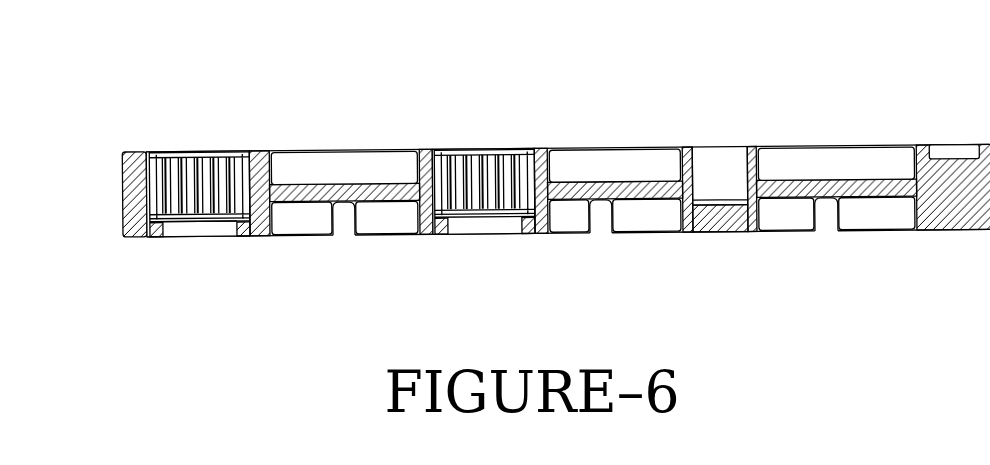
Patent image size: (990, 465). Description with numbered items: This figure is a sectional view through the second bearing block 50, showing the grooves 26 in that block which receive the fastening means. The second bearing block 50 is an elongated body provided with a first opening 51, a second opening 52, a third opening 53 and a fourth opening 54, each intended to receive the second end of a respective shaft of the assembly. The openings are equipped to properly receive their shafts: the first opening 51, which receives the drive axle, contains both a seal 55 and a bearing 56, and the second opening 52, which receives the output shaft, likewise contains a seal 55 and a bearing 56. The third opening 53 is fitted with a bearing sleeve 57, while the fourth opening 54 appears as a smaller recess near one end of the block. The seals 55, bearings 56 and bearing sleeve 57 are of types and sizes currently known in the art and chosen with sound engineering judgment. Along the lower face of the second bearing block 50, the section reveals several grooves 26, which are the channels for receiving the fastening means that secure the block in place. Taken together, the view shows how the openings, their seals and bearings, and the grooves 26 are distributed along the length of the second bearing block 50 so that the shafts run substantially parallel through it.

The second bearing block 50 is at (296, 96).
The first opening 51 is at (175, 150).
The second opening 52 is at (452, 146).
The third opening 53 is at (729, 153).
The fourth opening 54 is at (958, 146).
The seal 55 is at (217, 232).
The bearing 56 is at (219, 162).
The bearing sleeve 57 is at (698, 153).
The grooves 26 is at (343, 216).